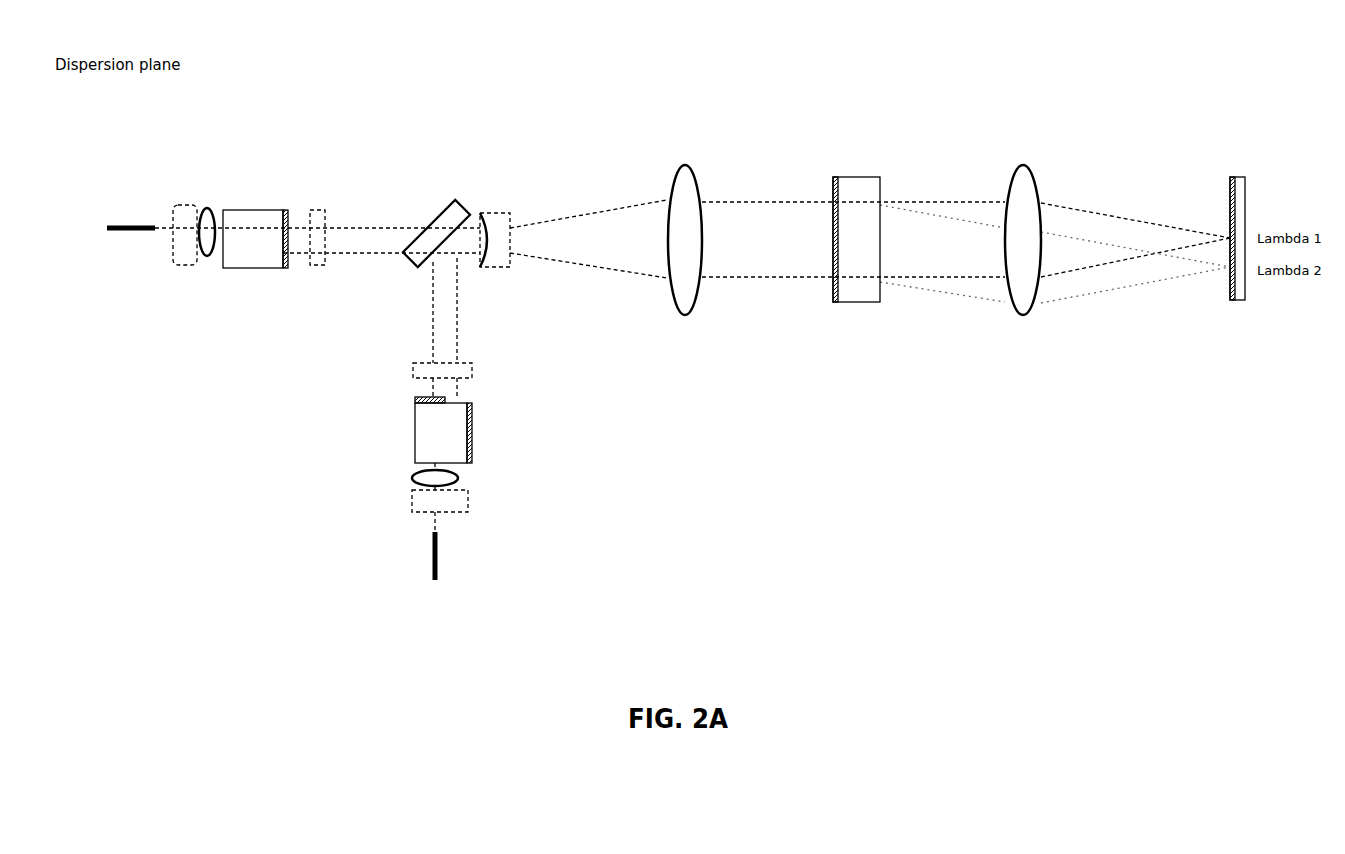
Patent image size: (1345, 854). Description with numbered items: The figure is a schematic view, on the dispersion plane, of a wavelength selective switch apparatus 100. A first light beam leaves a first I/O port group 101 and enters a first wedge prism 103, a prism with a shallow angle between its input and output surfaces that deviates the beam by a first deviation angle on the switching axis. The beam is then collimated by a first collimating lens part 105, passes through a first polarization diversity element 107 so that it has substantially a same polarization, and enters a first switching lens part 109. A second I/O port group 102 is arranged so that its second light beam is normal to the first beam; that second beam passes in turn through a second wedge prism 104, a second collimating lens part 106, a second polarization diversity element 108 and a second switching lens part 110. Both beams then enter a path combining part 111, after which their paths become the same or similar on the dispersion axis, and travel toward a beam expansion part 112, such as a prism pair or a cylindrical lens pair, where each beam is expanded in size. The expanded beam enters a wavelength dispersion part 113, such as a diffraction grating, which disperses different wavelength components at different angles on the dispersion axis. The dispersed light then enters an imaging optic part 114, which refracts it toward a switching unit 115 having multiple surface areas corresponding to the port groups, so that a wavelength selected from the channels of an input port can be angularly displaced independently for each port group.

The WSS apparatus 100 is at (780, 112).
The first I/O port group 101 is at (112, 238).
The second I/O port group 102 is at (430, 587).
The first wedge prism 103 is at (183, 204).
The second wedge prism 104 is at (407, 510).
The first collimating lens part 105 is at (205, 207).
The second collimating lens part 106 is at (410, 477).
The first polarization diversity element 107 is at (258, 209).
The second polarization diversity element 108 is at (408, 421).
The first switching lens part 109 is at (317, 208).
The second switching lens part 110 is at (412, 371).
The path combining part 111 is at (445, 198).
The beam expansion part 112 is at (667, 183).
The wavelength dispersion part 113 is at (855, 308).
The imaging optic part 114 is at (1023, 318).
The switching unit 115 is at (1237, 310).